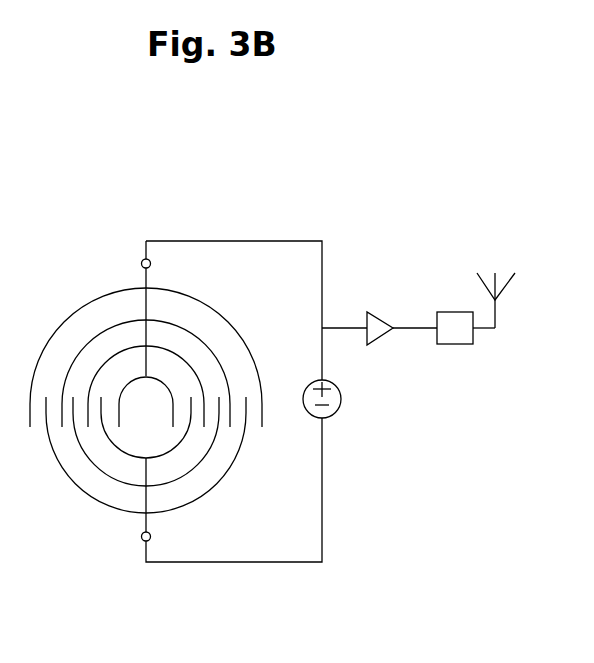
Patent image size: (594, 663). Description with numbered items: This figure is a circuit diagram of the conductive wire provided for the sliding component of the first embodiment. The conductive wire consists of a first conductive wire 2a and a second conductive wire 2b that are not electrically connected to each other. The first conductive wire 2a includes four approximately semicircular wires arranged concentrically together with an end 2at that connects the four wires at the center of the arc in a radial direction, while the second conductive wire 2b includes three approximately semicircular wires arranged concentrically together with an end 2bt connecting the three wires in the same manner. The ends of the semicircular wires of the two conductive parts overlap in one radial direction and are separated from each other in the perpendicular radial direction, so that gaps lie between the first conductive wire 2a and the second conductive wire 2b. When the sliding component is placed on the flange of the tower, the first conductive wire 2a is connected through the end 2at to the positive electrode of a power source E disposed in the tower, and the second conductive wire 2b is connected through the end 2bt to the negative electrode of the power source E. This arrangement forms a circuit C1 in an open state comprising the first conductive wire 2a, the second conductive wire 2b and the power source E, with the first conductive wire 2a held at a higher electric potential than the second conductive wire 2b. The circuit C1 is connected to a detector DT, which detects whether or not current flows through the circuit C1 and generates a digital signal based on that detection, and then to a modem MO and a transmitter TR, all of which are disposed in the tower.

The first conductive wire 2a is at (53, 298).
The end 2at is at (141, 262).
The second conductive wire 2b is at (100, 503).
The end 2bt is at (142, 540).
The circuit C1 is at (322, 525).
The detector DT is at (388, 310).
The modem MO is at (457, 312).
The transmitter TR is at (507, 285).
The power source E is at (341, 399).